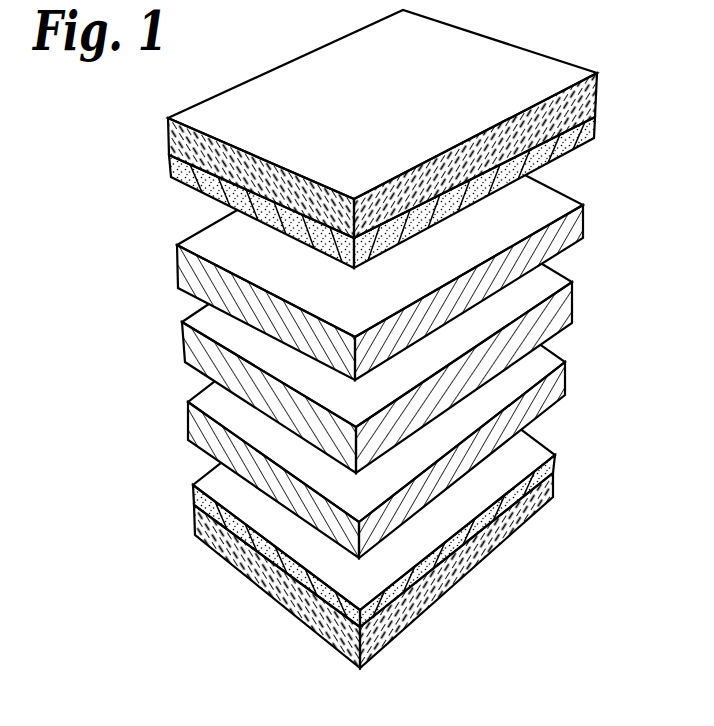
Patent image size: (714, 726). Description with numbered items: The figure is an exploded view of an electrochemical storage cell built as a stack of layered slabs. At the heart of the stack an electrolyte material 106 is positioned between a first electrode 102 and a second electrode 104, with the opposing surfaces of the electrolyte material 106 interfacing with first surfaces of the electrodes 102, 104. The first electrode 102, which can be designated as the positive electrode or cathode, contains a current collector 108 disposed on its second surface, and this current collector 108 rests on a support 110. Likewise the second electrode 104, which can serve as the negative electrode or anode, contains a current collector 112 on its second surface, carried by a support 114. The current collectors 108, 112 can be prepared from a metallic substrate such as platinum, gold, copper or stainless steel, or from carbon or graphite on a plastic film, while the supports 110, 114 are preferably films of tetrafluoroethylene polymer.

The first electrode 102 is at (188, 420).
The second electrode 104 is at (178, 257).
The electrolyte material 106 is at (185, 345).
The current collector 108 is at (195, 492).
The support 110 is at (197, 518).
The current collector 112 is at (168, 158).
The support 114 is at (168, 128).